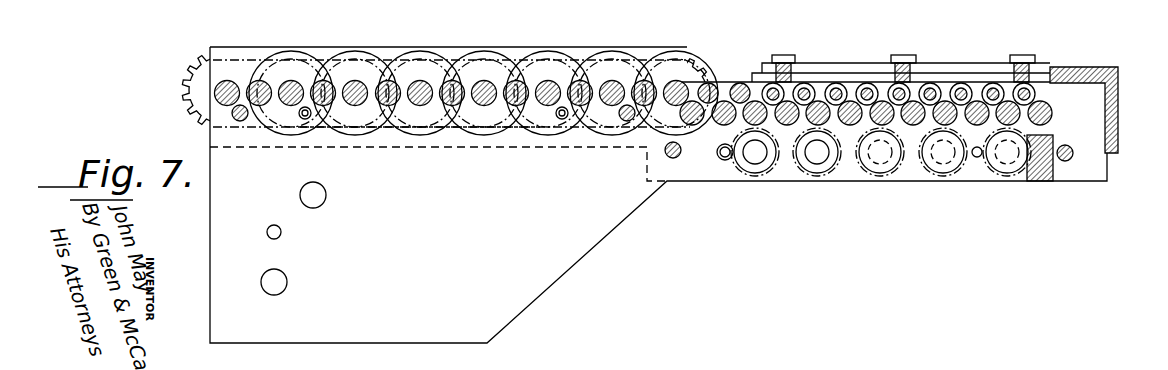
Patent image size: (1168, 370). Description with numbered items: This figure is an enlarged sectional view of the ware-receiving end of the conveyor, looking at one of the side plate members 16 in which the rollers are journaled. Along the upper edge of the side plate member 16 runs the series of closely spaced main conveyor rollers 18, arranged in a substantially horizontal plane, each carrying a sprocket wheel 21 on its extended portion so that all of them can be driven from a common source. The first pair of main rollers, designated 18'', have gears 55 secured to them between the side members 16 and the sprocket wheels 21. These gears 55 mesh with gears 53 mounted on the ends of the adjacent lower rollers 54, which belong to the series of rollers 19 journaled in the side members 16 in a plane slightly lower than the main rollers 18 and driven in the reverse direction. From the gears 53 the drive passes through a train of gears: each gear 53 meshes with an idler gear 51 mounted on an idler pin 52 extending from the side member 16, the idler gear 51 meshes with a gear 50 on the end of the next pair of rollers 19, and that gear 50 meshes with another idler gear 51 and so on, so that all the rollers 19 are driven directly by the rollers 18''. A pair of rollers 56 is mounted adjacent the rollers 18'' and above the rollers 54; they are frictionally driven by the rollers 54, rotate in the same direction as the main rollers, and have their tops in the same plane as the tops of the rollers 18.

The side plate member 16 is at (420, 247).
The roller 18 is at (436, 59).
The roller 18'' is at (676, 70).
The roller 19 is at (848, 104).
The sprocket wheel 21 is at (478, 133).
The gear 50 is at (786, 128).
The idler gear 51 is at (752, 166).
The idler pin 52 is at (757, 152).
The gear 53 is at (700, 128).
The roller 54 is at (690, 130).
The gear 55 is at (658, 130).
The roller 56 is at (741, 83).